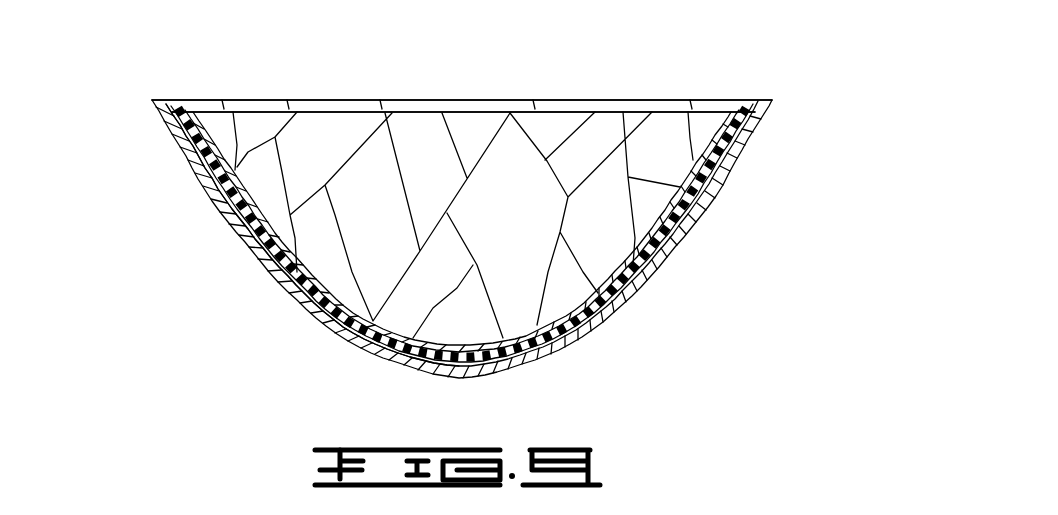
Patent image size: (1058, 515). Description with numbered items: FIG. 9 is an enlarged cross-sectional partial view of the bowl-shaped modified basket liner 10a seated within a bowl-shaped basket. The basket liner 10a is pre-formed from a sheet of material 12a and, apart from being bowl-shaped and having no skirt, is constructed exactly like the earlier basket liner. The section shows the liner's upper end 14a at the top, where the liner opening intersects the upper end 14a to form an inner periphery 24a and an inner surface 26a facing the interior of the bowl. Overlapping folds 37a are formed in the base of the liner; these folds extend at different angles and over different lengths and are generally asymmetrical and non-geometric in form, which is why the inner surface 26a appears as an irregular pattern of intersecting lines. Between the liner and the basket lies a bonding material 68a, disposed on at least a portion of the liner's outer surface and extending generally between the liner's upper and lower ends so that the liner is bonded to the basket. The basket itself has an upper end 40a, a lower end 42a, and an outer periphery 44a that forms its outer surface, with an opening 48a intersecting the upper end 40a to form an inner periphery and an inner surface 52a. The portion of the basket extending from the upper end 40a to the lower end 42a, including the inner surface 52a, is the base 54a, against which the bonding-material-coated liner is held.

The basket liner 10a is at (200, 86).
The upper end 40a is at (338, 98).
The sheet of material 12a is at (628, 101).
The upper end 14a is at (738, 114).
The inner periphery 24a is at (453, 120).
The opening 48a is at (528, 110).
The inner surface 26a is at (252, 177).
The inner surface 52a is at (253, 233).
The bonding material 68a is at (270, 272).
The lower end 42a is at (447, 376).
The base 54a is at (628, 305).
The outer periphery 44a is at (680, 238).
The overlapping folds 37a is at (677, 197).